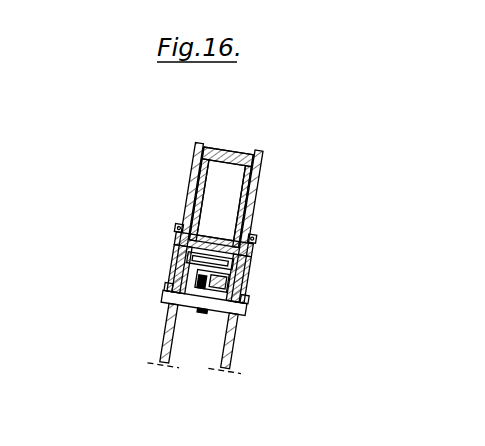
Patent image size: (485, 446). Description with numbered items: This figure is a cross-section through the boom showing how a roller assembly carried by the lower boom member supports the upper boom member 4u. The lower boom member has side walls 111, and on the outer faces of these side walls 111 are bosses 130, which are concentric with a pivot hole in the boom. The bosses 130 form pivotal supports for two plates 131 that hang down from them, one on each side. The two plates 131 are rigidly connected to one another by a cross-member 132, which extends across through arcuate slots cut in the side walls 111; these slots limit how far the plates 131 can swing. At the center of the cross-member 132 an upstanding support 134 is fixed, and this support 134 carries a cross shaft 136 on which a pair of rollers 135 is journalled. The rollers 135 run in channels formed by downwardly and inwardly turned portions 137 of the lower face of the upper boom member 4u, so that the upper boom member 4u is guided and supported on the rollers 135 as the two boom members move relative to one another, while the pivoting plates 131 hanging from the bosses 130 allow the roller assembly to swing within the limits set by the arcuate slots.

The upper boom member 4u is at (223, 153).
The side walls 111 is at (163, 357).
The bosses 130 is at (177, 233).
The plates 131 is at (177, 285).
The cross-member 132 is at (247, 308).
The upstanding support 134 is at (200, 310).
The rollers 135 is at (173, 262).
The cross shaft 136 is at (175, 272).
The downwardly and inwardly turned portions 137 is at (163, 291).